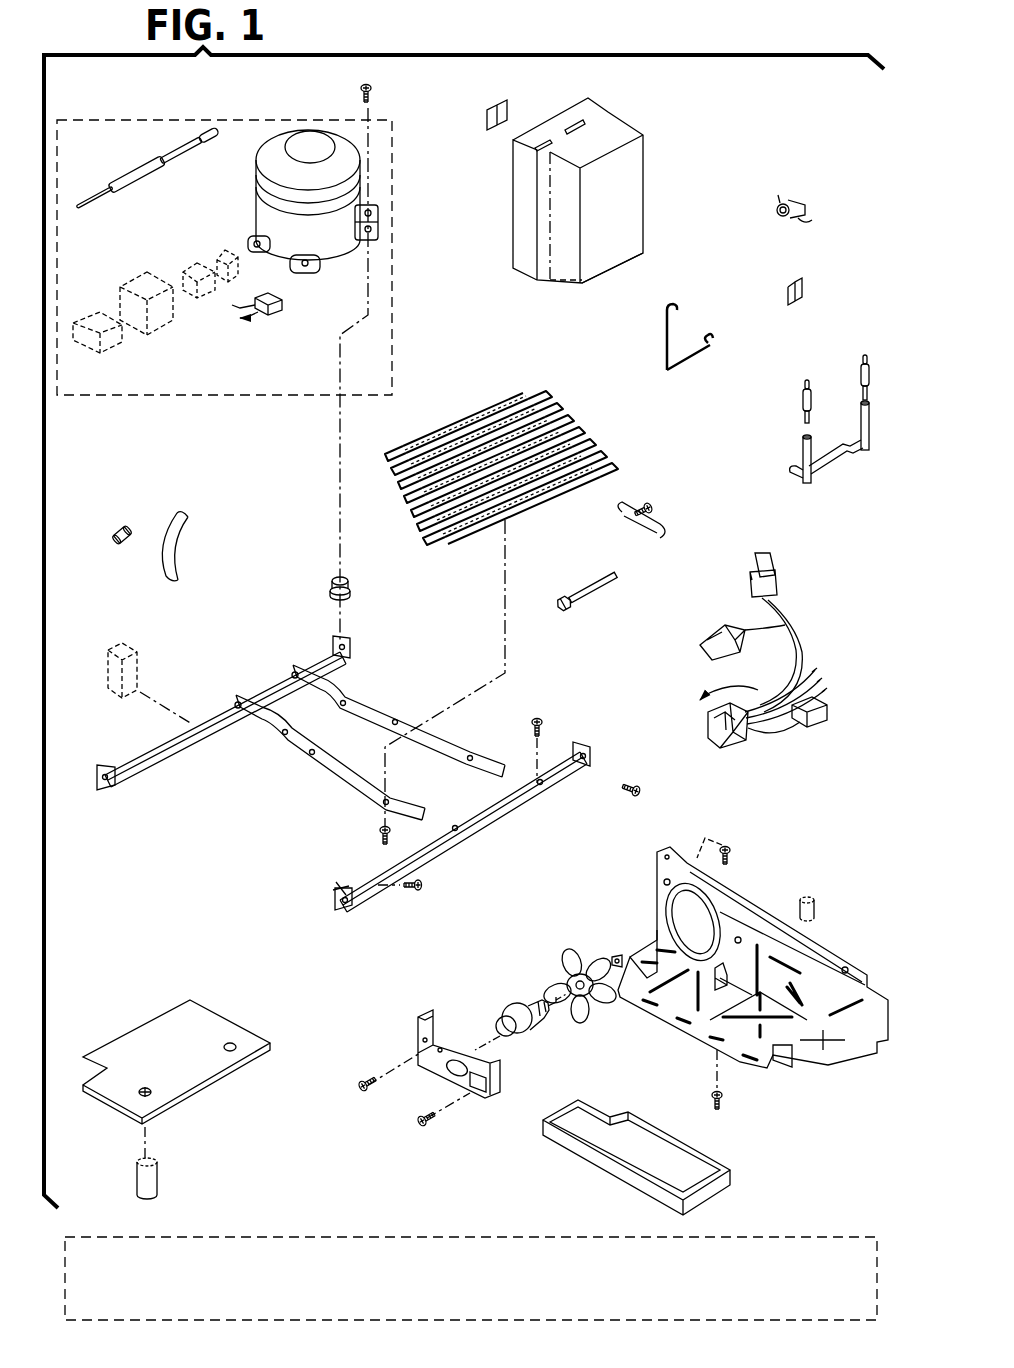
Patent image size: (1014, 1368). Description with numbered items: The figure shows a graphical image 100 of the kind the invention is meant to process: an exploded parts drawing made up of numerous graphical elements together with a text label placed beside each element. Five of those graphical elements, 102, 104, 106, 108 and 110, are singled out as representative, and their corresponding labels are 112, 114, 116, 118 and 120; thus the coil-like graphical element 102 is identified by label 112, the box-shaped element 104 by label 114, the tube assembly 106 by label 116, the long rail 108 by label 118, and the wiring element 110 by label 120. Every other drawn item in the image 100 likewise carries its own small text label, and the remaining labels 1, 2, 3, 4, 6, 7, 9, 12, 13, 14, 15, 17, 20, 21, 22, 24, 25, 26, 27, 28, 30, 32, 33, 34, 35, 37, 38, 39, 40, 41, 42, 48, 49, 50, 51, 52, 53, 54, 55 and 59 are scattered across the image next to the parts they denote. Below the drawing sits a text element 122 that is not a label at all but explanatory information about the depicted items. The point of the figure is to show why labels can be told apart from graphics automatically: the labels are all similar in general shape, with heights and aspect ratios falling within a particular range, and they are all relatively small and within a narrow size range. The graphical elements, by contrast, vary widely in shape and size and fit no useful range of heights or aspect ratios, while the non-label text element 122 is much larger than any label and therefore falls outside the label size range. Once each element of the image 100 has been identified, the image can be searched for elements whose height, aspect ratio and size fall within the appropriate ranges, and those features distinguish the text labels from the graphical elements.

The fan clip 1 is at (611, 948).
The fan blade 2 is at (595, 1032).
The condenser 3 is at (430, 550).
The screw 4 is at (740, 858).
The screw 6 is at (348, 1107).
The relay cover 7 is at (510, 200).
The cap 9 is at (112, 527).
The relay 12 is at (127, 282).
The terminal 13 is at (218, 252).
The wire bracket 14 is at (660, 342).
The overload protector 15 is at (183, 268).
The capacitor 17 is at (118, 345).
The base plate 20 is at (132, 1020).
The grommet 21 is at (165, 1172).
The relay cover assembly 22 is at (650, 132).
The fan motor 24 is at (497, 997).
The drain pan 25 is at (593, 1178).
The wiring harness assembly 26 is at (800, 628).
The thermostat 27 is at (122, 168).
The compressor assembly 28 is at (236, 398).
The frame assembly 30 is at (285, 752).
The motor bracket 32 is at (410, 1020).
The tube assembly 33 is at (795, 450).
The clip 34 is at (808, 290).
The terminal 35 is at (815, 212).
The screw 37 is at (353, 88).
The connector 38 is at (287, 303).
The grommet 39 is at (323, 592).
The screw 40 is at (425, 893).
The fan shroud panel 41 is at (650, 857).
The clip 42 is at (480, 108).
The front rail 48 is at (492, 836).
The screw 49 is at (375, 840).
The clamp 50 is at (625, 526).
The tube 51 is at (192, 546).
The bolt 52 is at (603, 598).
The screw 53 is at (552, 718).
The spacer 54 is at (823, 908).
The screw 55 is at (658, 510).
The terminal block 59 is at (108, 645).
The graphical image 100 is at (803, 155).
The graphical element 102 is at (497, 407).
The graphical element 104 is at (645, 180).
The graphical element 106 is at (832, 462).
The graphical element 108 is at (262, 690).
The graphical element 110 is at (745, 735).
The label 112 is at (400, 608).
The label 114 is at (722, 98).
The label 116 is at (727, 437).
The label 118 is at (222, 798).
The label 120 is at (834, 594).
The text element 122 is at (810, 1236).